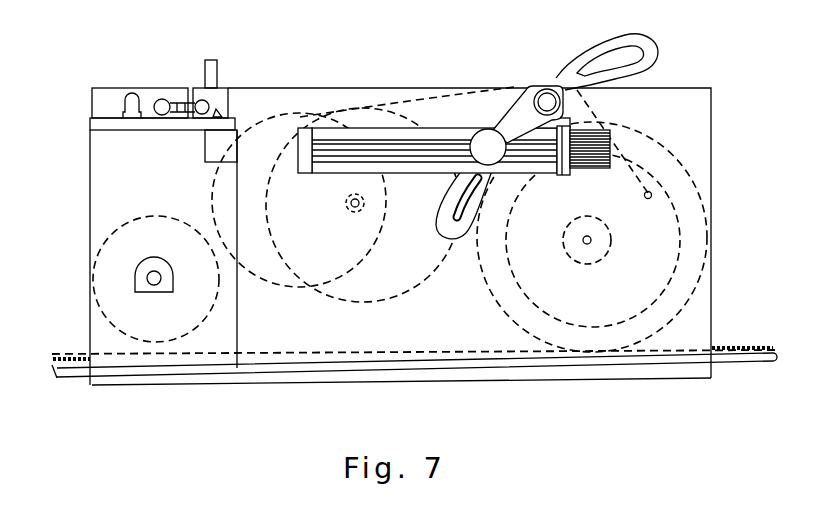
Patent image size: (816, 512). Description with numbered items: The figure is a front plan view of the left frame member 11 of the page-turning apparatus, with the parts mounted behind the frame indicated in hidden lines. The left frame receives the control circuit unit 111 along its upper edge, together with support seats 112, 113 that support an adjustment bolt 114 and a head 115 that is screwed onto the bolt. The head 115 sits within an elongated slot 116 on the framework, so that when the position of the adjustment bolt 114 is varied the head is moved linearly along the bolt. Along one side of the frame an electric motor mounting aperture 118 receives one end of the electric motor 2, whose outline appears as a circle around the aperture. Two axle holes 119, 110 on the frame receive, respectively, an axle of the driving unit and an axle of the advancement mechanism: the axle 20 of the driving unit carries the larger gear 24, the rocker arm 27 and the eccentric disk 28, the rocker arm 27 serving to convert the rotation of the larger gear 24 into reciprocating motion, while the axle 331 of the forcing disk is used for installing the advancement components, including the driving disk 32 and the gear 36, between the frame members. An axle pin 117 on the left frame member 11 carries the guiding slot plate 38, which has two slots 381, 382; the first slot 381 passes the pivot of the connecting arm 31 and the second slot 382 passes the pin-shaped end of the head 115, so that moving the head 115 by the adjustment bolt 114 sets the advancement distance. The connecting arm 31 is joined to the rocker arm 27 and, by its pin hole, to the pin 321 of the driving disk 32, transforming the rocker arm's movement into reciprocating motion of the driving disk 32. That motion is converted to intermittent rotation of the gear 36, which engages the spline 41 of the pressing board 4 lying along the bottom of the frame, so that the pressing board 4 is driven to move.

The electric motor 2 is at (153, 216).
The pressing board 4 is at (723, 370).
The left frame member 11 is at (688, 86).
The axle 20 is at (358, 210).
The larger gear 24 is at (356, 108).
The rocker arm 27 is at (416, 100).
The eccentric disk 28 is at (322, 116).
The connecting arm 31 is at (637, 140).
The driving disk 32 is at (707, 184).
The gear 36 is at (703, 250).
The guiding slot plate 38 is at (499, 110).
The spline 41 is at (733, 348).
The axle hole 110 is at (589, 243).
The control circuit unit 111 is at (105, 121).
The support seat 112 is at (306, 174).
The support seat 113 is at (566, 174).
The adjustment bolt 114 is at (352, 155).
The head 115 is at (500, 167).
The elongated slot 116 is at (378, 150).
The axle pin 117 is at (540, 93).
The electric motor mounting aperture 118 is at (140, 276).
The axle hole 119 is at (352, 212).
The pin 321 is at (652, 192).
The axle 331 is at (584, 246).
The slot 381 is at (607, 62).
The slot 382 is at (458, 208).